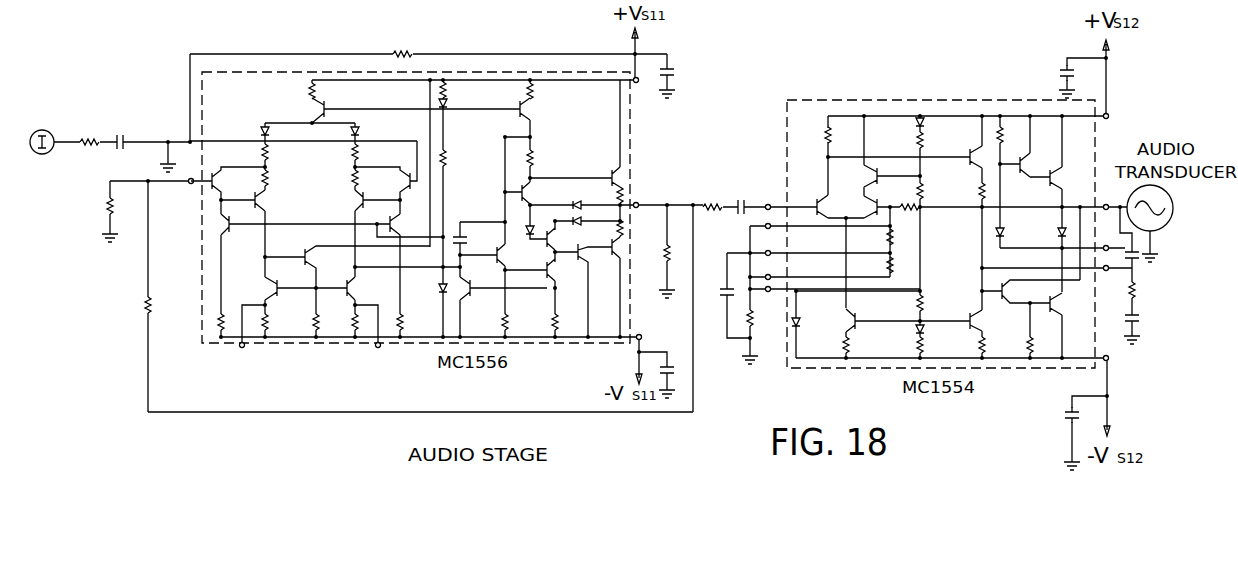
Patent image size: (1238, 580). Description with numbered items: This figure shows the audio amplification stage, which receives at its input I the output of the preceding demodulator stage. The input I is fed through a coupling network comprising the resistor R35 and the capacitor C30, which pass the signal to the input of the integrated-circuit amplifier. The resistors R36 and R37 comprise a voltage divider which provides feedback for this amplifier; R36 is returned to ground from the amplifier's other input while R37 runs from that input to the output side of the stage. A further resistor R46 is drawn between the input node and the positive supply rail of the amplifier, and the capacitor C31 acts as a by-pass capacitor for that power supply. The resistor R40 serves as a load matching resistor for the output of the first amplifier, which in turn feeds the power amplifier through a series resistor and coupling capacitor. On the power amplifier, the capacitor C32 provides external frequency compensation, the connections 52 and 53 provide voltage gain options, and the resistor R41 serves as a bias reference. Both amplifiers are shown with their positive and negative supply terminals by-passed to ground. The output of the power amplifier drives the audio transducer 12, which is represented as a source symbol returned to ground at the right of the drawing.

The resistor R35 is at (80, 136).
The capacitor C30 is at (127, 135).
The resistor R36 is at (87, 211).
The resistor R37 is at (127, 316).
The feedback resistor R46 is at (407, 41).
The by-pass capacitor C31 is at (678, 71).
The load matching resistor R40 is at (662, 265).
The bias reference resistor R41 is at (753, 324).
The connection 52 is at (748, 230).
The connection 53 is at (726, 266).
The capacitor C32 is at (1135, 260).
The audio transducer 12 is at (1174, 210).